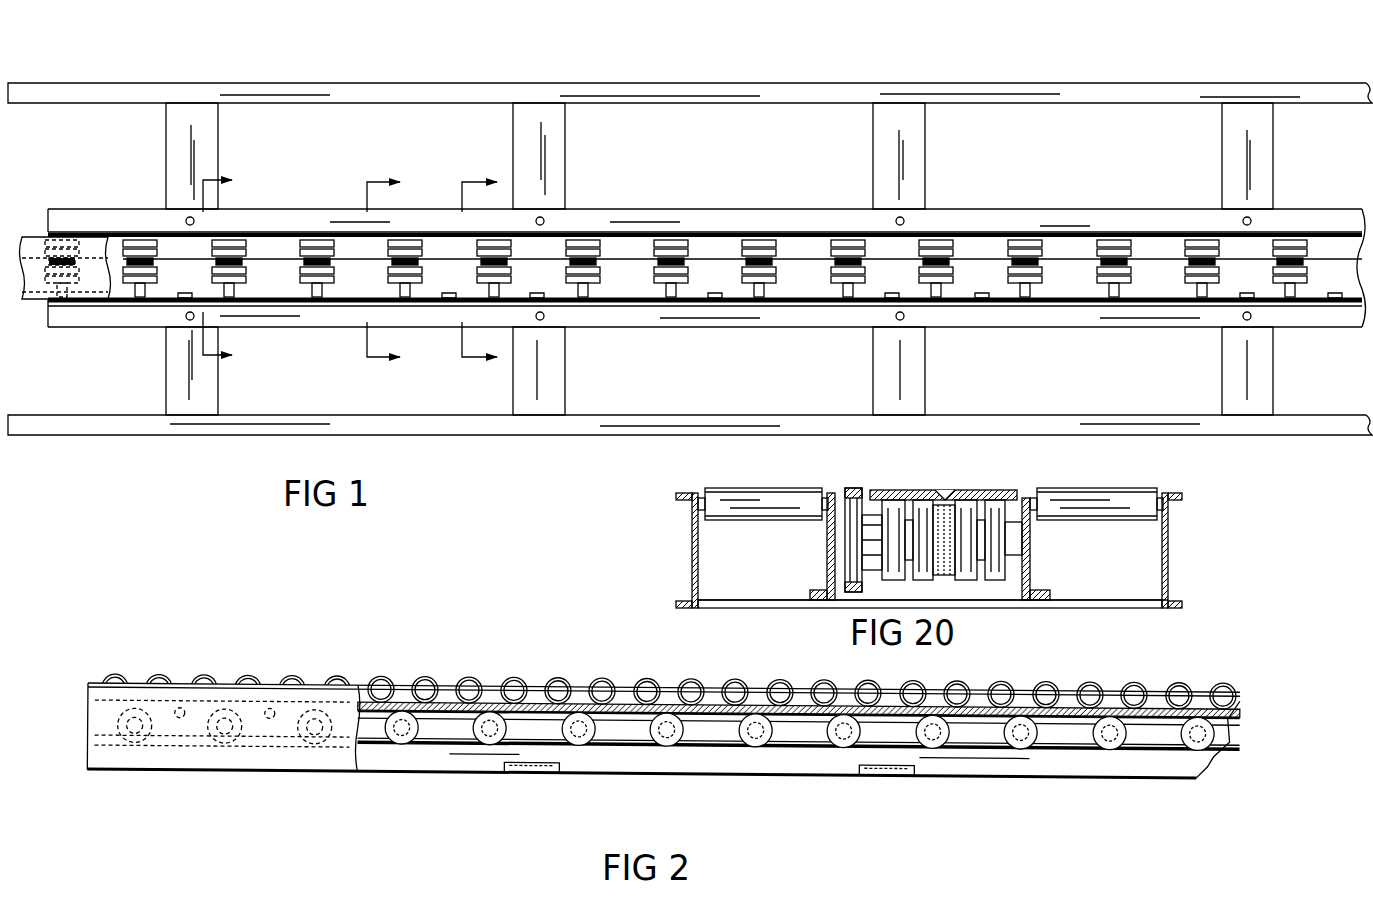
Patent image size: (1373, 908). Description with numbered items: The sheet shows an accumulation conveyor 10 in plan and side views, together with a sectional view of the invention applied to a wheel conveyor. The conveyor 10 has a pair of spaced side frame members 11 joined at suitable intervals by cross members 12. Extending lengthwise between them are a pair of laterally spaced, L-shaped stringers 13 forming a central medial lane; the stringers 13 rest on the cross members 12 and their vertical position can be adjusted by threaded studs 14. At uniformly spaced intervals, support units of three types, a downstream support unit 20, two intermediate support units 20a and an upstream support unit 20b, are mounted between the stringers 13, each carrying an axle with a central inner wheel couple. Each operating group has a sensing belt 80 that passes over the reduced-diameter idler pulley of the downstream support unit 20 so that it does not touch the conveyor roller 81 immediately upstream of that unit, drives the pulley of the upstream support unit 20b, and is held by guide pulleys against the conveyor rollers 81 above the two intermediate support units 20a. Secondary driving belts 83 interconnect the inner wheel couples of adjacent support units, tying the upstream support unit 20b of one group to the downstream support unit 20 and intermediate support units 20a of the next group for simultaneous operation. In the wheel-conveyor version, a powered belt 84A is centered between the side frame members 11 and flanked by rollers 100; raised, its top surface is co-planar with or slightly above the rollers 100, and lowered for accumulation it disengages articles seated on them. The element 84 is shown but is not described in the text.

In FIG. 1, the conveyor 10 is at (690, 257).
In FIG. 1, the side frame members 11 is at (721, 97).
In FIG. 20, the side frame members 11 is at (691, 493).
In FIG. 2, the side frame members 11 is at (644, 766).
In FIG. 1, the cross members 12 is at (192, 110).
In FIG. 20, the cross members 12 is at (808, 602).
In FIG. 2, the cross members 12 is at (506, 770).
In FIG. 1, the stringers 13 is at (731, 222).
In FIG. 1, the threaded studs 14 is at (907, 218).
In FIG. 1, the support unit 20 is at (693, 265).
In FIG. 2, the support unit 20 is at (663, 732).
In FIG. 1, the intermediate support unit 20a is at (320, 224).
In FIG. 2, the intermediate support unit 20a is at (580, 746).
In FIG. 1, the upstream support unit 20b is at (433, 221).
In FIG. 20, the upstream support unit 20b is at (993, 614).
In FIG. 2, the upstream support unit 20b is at (400, 746).
In FIG. 1, the sensing belt 80 is at (1078, 297).
In FIG. 20, the sensing belt 80 is at (852, 492).
In FIG. 2, the sensing belt 80 is at (722, 746).
In FIG. 2, the conveyor rollers 81 is at (380, 679).
In FIG. 1, the secondary driving belts 83 is at (978, 265).
In FIG. 2, the secondary driving belts 83 is at (433, 744).
In FIG. 1, the cover strip 84 is at (90, 265).
In FIG. 2, the cover strip 84 is at (480, 703).
In FIG. 20, the powered belt 84A is at (942, 500).
In FIG. 20, the rollers 100 is at (782, 497).